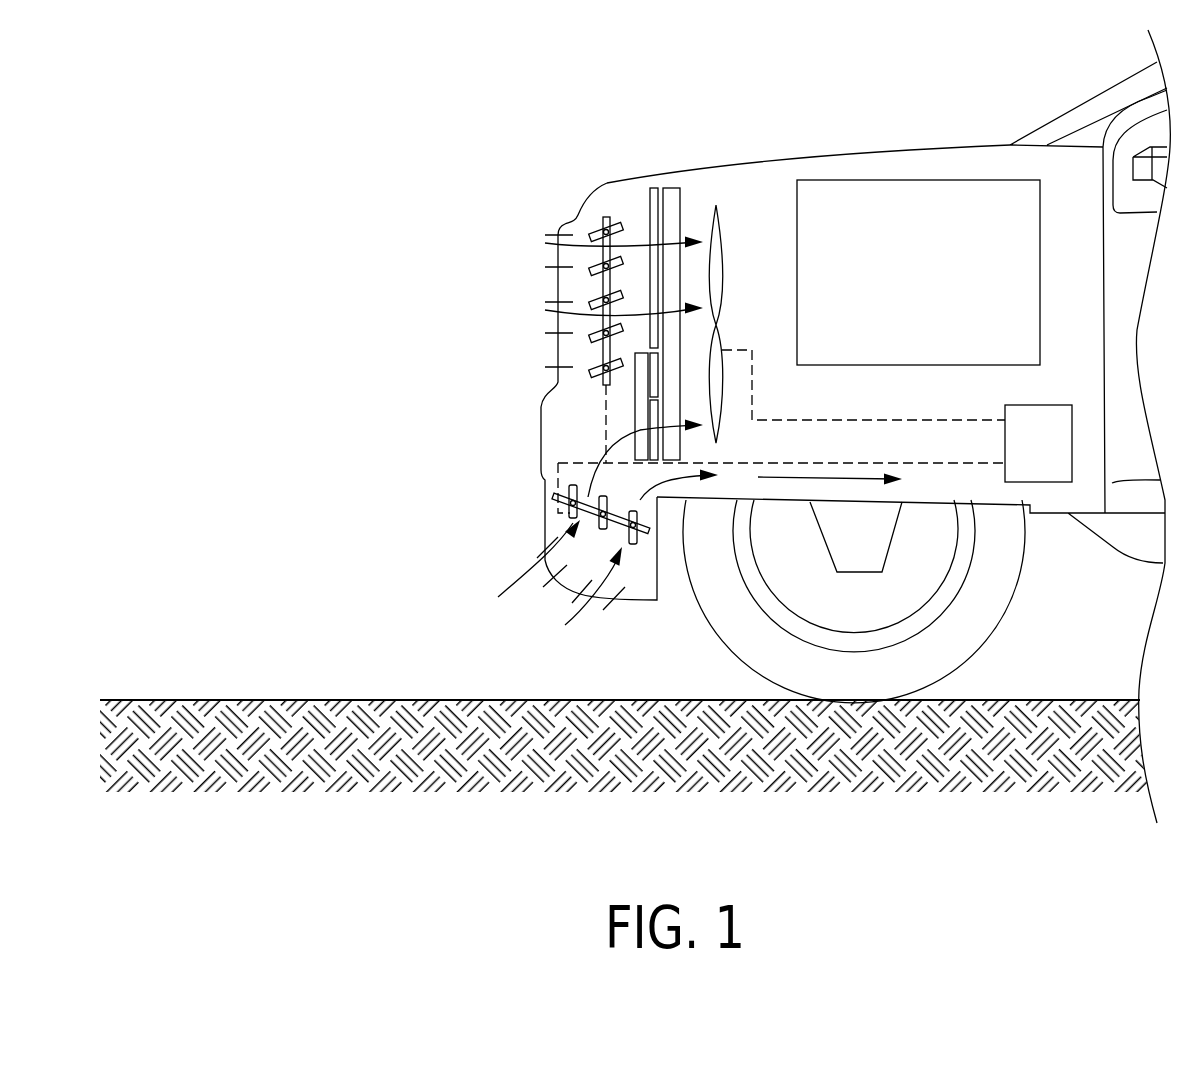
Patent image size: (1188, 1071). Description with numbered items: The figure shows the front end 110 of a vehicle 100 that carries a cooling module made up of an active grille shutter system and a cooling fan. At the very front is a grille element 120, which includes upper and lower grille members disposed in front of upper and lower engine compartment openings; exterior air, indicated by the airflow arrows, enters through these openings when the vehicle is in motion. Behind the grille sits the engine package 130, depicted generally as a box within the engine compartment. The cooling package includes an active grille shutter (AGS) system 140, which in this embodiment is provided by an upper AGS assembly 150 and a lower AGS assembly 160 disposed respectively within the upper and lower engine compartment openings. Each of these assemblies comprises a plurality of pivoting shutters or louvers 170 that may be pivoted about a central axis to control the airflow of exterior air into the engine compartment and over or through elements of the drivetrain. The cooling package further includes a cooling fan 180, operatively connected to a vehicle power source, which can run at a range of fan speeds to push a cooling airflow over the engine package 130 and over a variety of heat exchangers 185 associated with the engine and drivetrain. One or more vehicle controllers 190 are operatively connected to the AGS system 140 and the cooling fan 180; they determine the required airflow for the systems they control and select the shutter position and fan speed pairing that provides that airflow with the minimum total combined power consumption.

The vehicle 100 is at (1048, 90).
The front end 110 is at (706, 128).
The grille element 120 is at (436, 328).
The engine package 130 is at (944, 293).
The active grille shutter (AGS) system 140 is at (595, 216).
The upper AGS assembly 150 is at (605, 385).
The lower AGS assembly 160 is at (640, 548).
The pivoting shutters or louvers 170 is at (620, 222).
The cooling fan 180 is at (716, 248).
The heat exchangers 185 is at (680, 448).
The vehicle controller 190 is at (1066, 458).